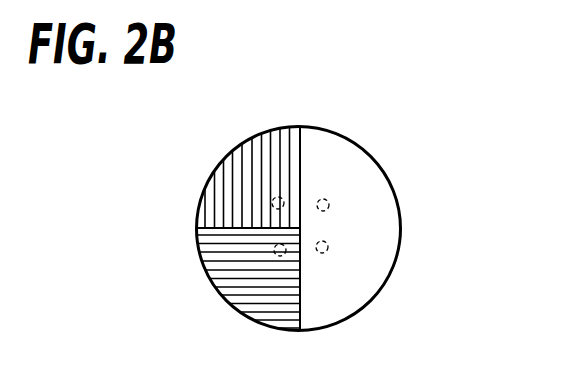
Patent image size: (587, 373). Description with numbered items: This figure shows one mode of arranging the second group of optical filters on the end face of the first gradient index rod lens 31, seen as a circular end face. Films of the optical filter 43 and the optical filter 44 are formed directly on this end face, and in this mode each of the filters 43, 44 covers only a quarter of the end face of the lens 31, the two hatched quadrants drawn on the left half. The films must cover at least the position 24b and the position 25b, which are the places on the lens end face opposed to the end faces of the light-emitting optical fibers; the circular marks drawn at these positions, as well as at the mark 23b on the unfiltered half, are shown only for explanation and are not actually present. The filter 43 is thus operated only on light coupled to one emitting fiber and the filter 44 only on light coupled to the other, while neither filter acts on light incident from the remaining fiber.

The first gradient index rod lens 31 is at (388, 230).
The optical filter 44 is at (300, 128).
The optical filter 43 is at (212, 242).
The position 25b is at (275, 196).
The position 24b is at (278, 257).
The hole 23b is at (327, 197).